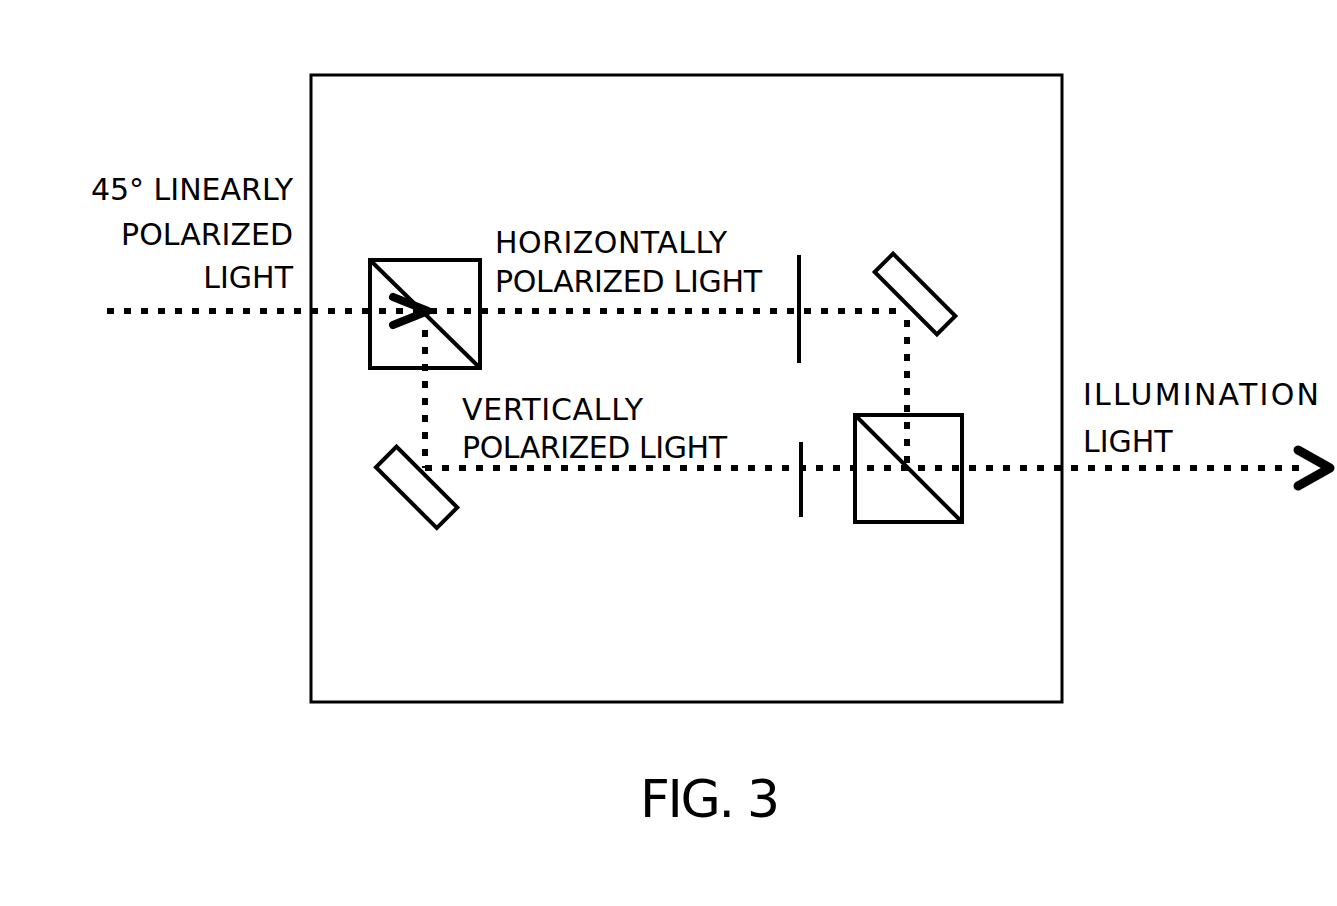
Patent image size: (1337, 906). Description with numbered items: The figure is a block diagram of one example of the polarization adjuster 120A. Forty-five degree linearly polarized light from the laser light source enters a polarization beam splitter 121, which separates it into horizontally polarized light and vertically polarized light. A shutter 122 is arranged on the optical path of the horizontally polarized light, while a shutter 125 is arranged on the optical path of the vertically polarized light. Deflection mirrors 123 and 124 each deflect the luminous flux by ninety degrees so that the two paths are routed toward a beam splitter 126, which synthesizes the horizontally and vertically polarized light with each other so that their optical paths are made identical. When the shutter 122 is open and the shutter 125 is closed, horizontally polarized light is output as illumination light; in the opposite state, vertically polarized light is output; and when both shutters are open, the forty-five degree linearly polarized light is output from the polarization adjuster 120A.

The polarization adjuster 120A is at (686, 355).
The polarization beam splitter 121 is at (447, 248).
The shutter 122 is at (830, 192).
The deflection mirror 123 is at (912, 272).
The deflection mirror 124 is at (413, 508).
The shutter 125 is at (800, 483).
The beam splitter 126 is at (920, 516).